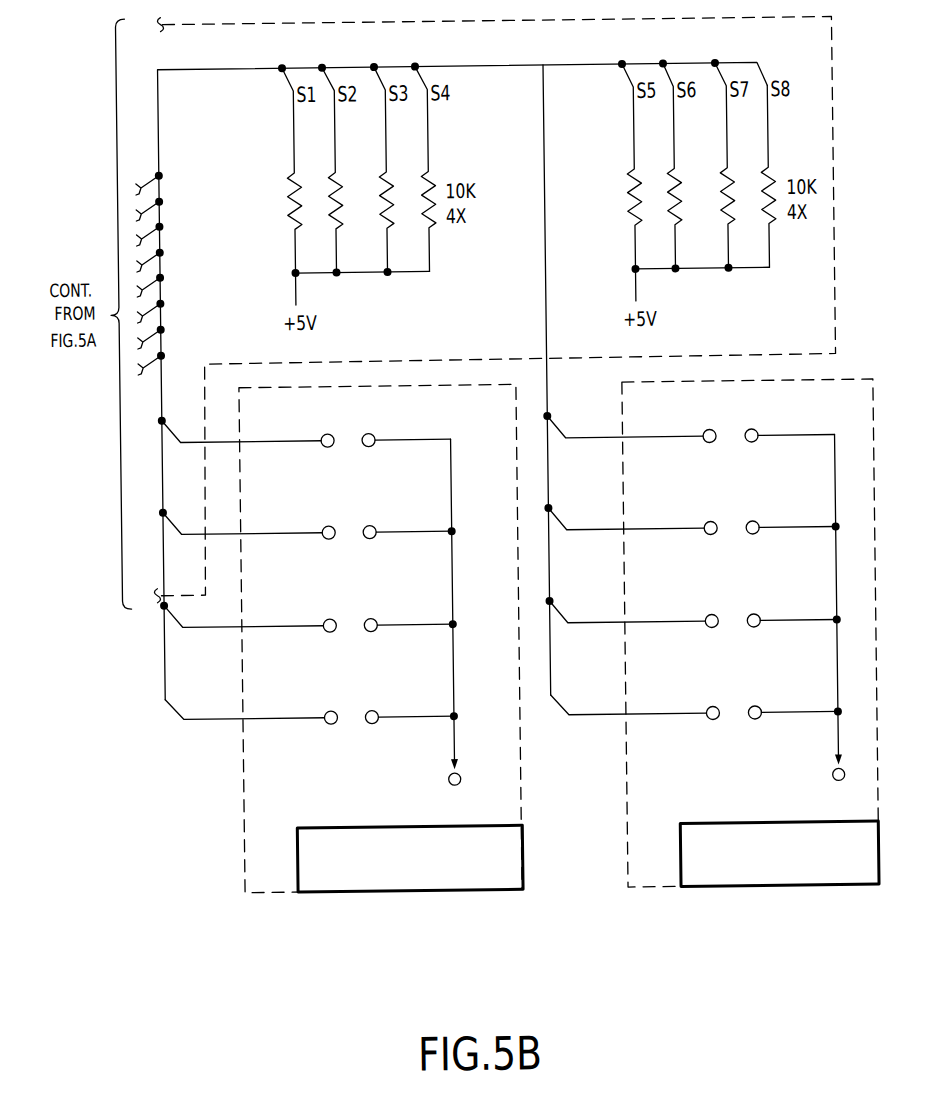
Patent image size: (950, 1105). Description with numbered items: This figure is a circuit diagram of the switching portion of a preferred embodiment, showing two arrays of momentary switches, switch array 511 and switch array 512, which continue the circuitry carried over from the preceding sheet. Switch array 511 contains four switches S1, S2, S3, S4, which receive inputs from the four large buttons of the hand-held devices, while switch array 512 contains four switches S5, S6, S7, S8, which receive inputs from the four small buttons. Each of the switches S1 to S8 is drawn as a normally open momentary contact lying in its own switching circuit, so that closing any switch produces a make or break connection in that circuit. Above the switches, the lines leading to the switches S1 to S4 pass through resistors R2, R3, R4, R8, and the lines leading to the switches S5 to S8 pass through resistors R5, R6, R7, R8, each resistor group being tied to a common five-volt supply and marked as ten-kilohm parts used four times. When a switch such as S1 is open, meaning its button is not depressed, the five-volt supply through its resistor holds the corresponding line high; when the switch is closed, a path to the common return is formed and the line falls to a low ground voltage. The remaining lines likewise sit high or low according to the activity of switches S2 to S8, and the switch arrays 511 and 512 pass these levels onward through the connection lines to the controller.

The switch array 511 is at (340, 683).
The switch array 512 is at (711, 677).
The switch S1 is at (318, 425).
The switch S2 is at (318, 517).
The switch S3 is at (318, 610).
The switch S4 is at (318, 702).
The switch S5 is at (700, 425).
The switch S6 is at (700, 517).
The switch S7 is at (700, 610).
The switch S8 is at (700, 702).
The pull-up resistor R2 is at (299, 170).
The pull-up resistor R3 is at (339, 169).
The pull-up resistor R4 is at (391, 169).
The pull-up resistor R5 is at (639, 166).
The pull-up resistor R6 is at (679, 165).
The pull-up resistor R7 is at (732, 164).
The pull-up resistor R8 is at (602, 165).